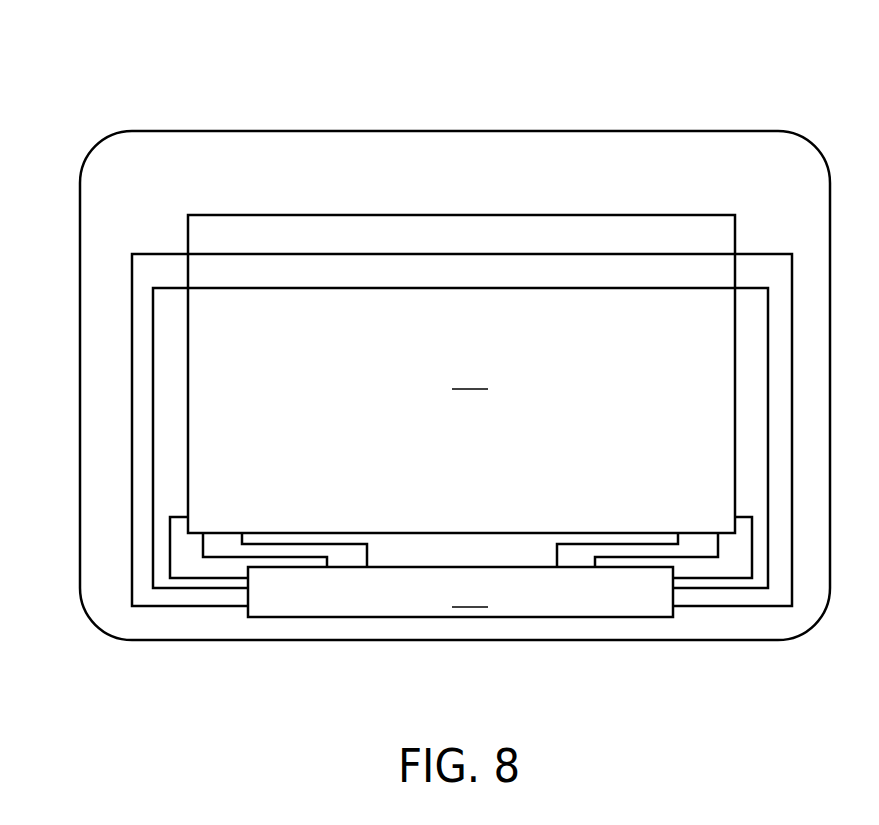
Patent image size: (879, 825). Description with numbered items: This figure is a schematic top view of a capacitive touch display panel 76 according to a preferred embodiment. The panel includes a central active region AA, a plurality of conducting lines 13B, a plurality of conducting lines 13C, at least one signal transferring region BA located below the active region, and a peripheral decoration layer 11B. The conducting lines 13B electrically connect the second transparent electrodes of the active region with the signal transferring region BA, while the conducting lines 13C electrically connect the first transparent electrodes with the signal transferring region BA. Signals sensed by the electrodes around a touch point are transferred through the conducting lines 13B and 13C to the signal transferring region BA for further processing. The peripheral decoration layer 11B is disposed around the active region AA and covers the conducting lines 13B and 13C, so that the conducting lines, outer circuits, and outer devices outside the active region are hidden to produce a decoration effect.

The capacitive touch display panel 76 is at (704, 92).
The peripheral decoration layer 11B is at (128, 172).
The conducting lines 13B is at (131, 577).
The conducting lines 13C is at (350, 543).